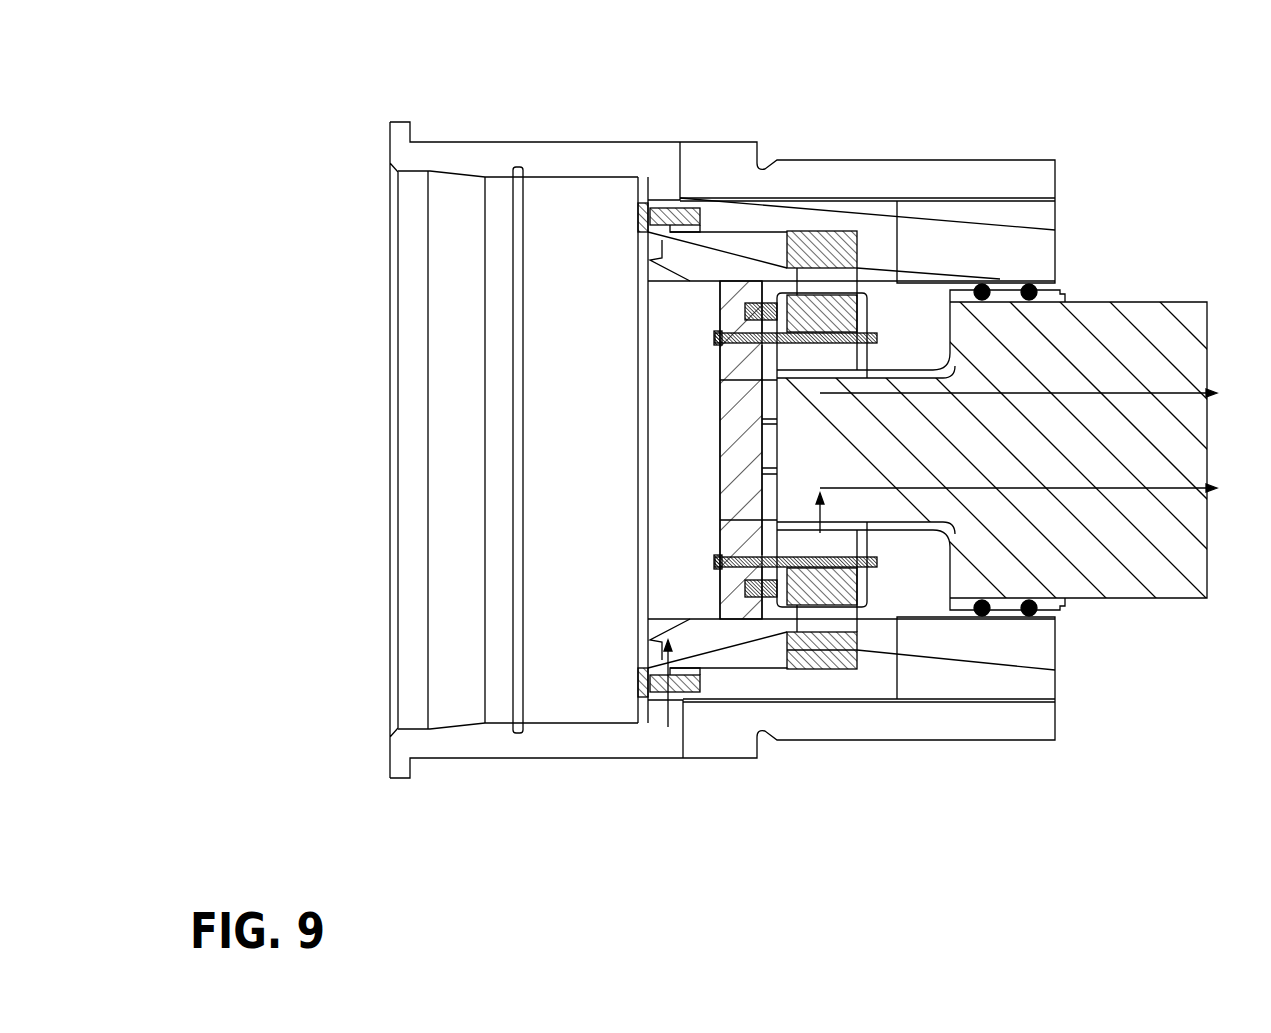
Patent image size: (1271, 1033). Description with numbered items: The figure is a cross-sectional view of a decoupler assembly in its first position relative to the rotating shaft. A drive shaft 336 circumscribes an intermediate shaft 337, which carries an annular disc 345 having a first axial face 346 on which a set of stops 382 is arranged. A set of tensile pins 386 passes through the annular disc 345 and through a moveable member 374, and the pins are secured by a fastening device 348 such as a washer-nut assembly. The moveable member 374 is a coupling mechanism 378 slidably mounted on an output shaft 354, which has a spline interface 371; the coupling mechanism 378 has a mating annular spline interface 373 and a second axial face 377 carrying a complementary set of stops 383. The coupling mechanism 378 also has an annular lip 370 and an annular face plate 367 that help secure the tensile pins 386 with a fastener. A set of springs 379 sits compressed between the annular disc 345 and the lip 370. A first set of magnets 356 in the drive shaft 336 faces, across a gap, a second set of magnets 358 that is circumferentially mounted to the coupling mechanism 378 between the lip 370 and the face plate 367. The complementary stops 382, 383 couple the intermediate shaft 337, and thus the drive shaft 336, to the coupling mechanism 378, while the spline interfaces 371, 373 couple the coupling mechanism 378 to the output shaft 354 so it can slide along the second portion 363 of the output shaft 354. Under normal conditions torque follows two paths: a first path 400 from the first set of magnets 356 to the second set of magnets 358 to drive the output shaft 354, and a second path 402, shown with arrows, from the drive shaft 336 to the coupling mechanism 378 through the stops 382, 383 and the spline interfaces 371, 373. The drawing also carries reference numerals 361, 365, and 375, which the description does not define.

The drive shaft 336 is at (663, 160).
The intermediate shaft 337 is at (711, 243).
The fastening device 348 is at (643, 203).
The annular disc 345 is at (737, 300).
The set of springs 379 is at (776, 330).
The set of tensile pins 386 is at (716, 339).
The complementary set of stops 383 is at (777, 540).
The set of stops 382 is at (777, 360).
The moveable member 374 is at (808, 537).
The flow path 375 is at (740, 547).
The second axial face 377 is at (765, 568).
The first set of magnets 356 is at (843, 290).
The annular lip 370 is at (821, 670).
The first axial face 346 is at (846, 294).
The annular face plate 367 is at (858, 604).
The second set of magnets 358 is at (860, 262).
The coupling mechanism 378 is at (867, 568).
The first path 400 is at (815, 388).
The annular spline interface 373 is at (912, 370).
The spline interface 371 is at (1055, 200).
The o-ring seal 365 is at (1003, 284).
The shaft 361 is at (1119, 453).
The second portion 363 is at (889, 455).
The output shaft 354 is at (1157, 527).
The second path 402 is at (1070, 489).